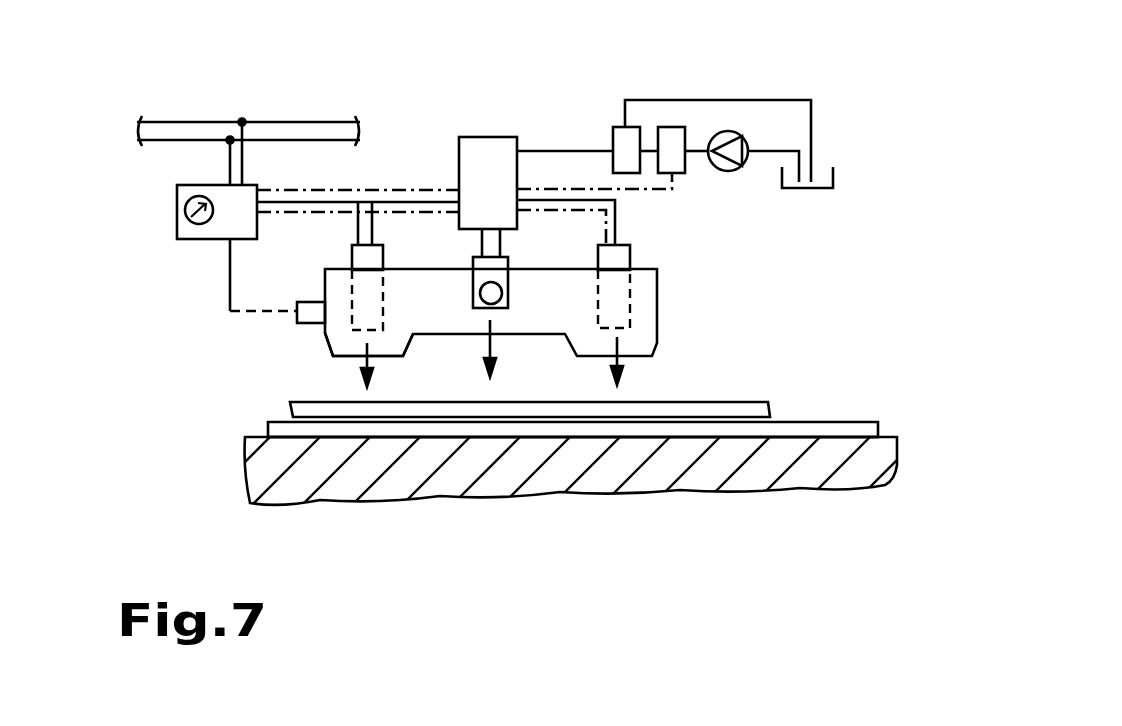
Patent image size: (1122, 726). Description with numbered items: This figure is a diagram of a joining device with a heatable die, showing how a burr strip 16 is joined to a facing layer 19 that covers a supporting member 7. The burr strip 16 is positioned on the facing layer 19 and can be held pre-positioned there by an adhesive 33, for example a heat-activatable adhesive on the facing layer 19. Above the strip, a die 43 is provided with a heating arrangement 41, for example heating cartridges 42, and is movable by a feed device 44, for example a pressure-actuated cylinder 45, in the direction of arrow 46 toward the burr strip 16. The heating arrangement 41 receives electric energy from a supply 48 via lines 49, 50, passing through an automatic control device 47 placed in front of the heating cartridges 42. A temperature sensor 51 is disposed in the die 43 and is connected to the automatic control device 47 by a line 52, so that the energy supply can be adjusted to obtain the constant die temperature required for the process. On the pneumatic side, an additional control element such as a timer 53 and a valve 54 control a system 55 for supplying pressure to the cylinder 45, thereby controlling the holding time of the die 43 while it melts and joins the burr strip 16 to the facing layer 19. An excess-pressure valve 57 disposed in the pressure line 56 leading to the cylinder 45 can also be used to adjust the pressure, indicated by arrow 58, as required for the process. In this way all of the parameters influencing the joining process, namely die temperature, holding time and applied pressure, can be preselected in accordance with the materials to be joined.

The supporting member 7 is at (862, 460).
The burr strip 16 is at (705, 405).
The facing layer 19 is at (795, 428).
The adhesive 33 is at (366, 440).
The heating arrangement 41 is at (378, 232).
The heating cartridges 42 is at (352, 254).
The die 43 is at (676, 309).
The feed device 44 is at (536, 176).
The pressure-actuated cylinder 45 is at (477, 150).
The arrow 46 is at (493, 340).
The automatic control device 47 is at (168, 240).
The supply 48 is at (150, 152).
The line 49 is at (245, 163).
The line 50 is at (417, 199).
The temperature sensor 51 is at (314, 336).
The line 52 is at (247, 315).
The timer 53 is at (192, 201).
The valve 54 is at (672, 140).
The system for supplying pressure 55 is at (817, 137).
The pressure line 56 is at (527, 148).
The excess-pressure valve 57 is at (630, 140).
The arrow 58 is at (622, 348).